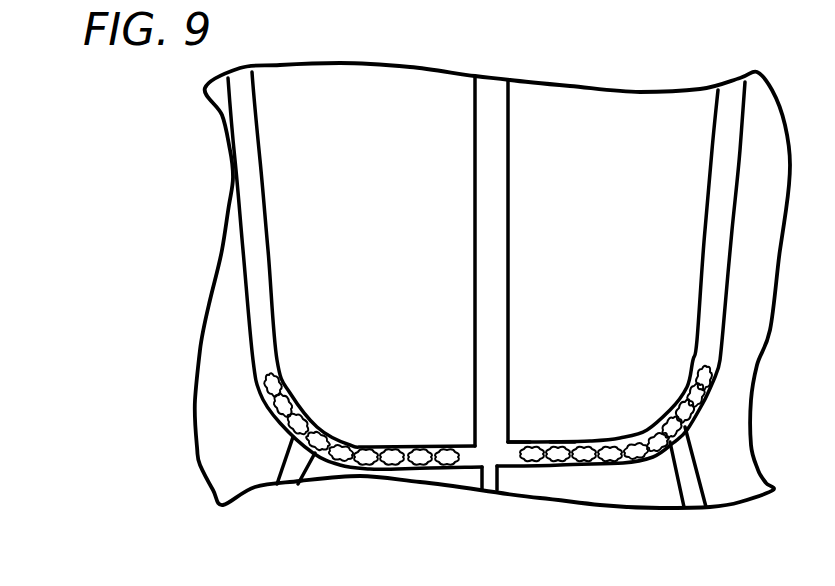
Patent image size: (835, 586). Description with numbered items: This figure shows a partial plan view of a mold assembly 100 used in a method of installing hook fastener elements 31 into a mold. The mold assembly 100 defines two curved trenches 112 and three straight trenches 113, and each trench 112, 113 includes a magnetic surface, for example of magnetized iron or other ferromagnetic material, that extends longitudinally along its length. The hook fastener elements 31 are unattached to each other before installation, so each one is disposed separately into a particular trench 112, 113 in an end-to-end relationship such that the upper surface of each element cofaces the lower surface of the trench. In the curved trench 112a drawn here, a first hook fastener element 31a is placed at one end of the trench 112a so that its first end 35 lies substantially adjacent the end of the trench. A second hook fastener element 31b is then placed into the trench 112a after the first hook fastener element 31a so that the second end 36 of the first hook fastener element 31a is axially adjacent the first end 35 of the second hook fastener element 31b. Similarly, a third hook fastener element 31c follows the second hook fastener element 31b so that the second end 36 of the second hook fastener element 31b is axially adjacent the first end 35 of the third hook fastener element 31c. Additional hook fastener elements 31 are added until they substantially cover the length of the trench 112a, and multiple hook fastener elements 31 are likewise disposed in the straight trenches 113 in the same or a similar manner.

The mold assembly 100 is at (652, 106).
The curved trench 112 is at (270, 261).
The curved trench 112a is at (510, 458).
The straight trench 113 is at (510, 136).
The hook fastener element 31 is at (262, 388).
The first hook fastener element 31a is at (537, 461).
The second hook fastener element 31b is at (565, 460).
The third hook fastener element 31c is at (595, 460).
The first end 35 is at (518, 442).
The second end 36 is at (562, 442).